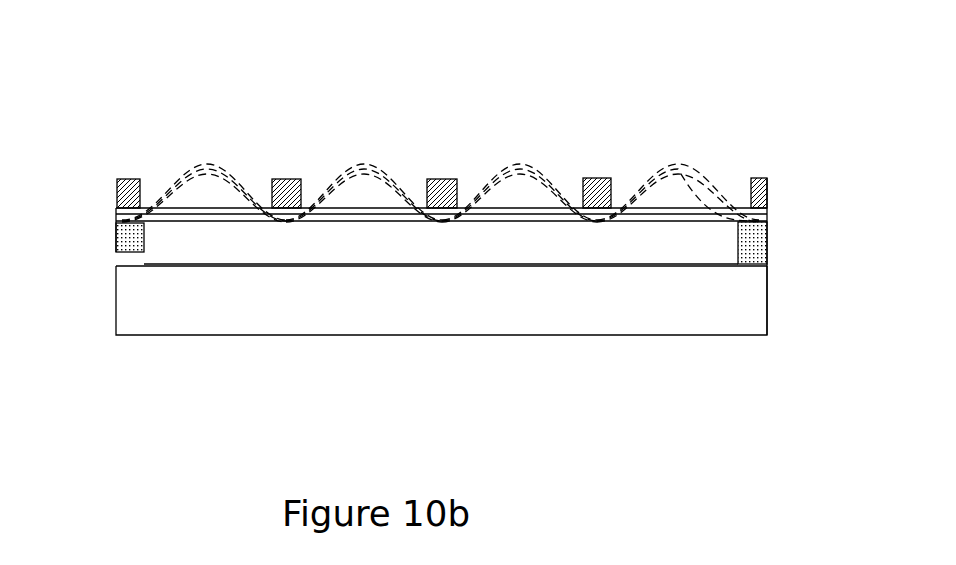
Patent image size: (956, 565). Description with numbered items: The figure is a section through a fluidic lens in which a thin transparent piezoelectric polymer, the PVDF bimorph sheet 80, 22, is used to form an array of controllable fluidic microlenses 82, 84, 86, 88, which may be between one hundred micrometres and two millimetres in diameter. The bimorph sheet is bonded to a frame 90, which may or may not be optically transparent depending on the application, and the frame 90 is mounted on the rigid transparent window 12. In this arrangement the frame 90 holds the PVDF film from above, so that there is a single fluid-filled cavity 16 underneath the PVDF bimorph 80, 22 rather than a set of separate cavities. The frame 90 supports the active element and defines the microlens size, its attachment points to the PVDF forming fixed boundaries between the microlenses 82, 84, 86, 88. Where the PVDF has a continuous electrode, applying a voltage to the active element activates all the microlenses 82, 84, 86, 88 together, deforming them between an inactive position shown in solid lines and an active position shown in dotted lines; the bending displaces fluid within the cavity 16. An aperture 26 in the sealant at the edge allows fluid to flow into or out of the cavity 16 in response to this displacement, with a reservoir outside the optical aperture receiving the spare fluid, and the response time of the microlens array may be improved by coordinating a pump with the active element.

The PVDF bimorph sheet 80 is at (212, 162).
The PVDF bimorph 22 is at (460, 169).
The fluidic microlens 82 is at (208, 198).
The fluidic microlens 84 is at (360, 195).
The fluidic microlens 86 is at (517, 195).
The fluidic microlens 88 is at (680, 190).
The frame 90 is at (595, 178).
The aperture 26 is at (139, 260).
The rigid transparent window 12 is at (470, 315).
The cavity 16 is at (694, 242).